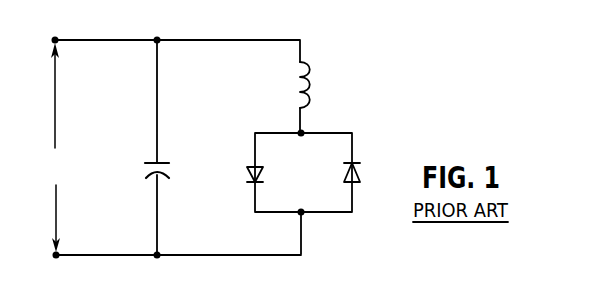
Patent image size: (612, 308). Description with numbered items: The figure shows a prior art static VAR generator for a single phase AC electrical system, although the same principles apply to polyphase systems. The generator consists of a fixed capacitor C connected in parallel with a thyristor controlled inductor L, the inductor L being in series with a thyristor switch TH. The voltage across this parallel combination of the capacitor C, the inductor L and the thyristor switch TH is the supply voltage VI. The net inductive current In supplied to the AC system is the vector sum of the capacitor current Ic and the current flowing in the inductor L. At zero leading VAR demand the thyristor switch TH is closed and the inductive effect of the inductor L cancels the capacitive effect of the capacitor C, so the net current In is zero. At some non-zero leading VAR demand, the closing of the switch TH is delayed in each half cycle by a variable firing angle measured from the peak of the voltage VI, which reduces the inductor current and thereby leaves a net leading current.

The voltage across the parallel combination VI is at (55, 147).
The net inductive current In is at (126, 32).
The capacitor current Ic is at (140, 99).
The fixed capacitor C is at (171, 166).
The thyristor controlled inductor L is at (310, 84).
The thyristor switch TH is at (314, 175).